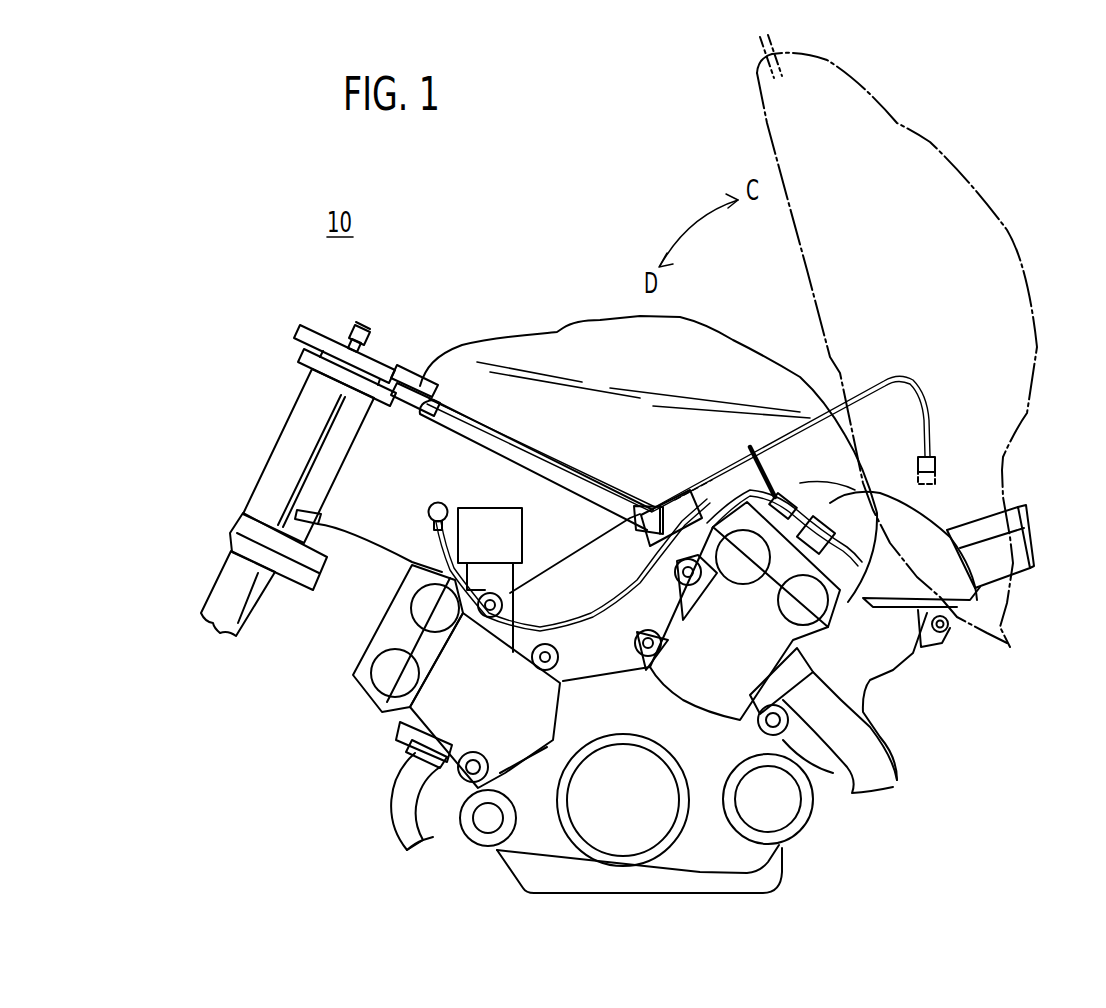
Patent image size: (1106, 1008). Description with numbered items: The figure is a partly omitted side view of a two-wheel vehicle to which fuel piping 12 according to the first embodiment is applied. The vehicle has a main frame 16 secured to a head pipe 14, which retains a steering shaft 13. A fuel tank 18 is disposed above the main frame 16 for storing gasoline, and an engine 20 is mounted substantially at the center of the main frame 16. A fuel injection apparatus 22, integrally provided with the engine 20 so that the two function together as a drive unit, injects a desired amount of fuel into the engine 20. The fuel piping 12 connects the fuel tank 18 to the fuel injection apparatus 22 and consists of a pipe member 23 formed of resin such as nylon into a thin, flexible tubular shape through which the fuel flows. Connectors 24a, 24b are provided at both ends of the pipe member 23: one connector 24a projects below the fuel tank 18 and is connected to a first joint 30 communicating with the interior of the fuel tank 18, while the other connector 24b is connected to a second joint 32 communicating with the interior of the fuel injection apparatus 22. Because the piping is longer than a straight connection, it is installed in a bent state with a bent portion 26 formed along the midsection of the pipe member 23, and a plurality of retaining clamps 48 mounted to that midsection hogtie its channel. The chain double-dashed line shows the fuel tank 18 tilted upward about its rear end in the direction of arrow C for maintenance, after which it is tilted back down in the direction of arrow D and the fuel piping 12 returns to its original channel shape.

The fuel piping 12 is at (542, 562).
The steering shaft 13 is at (230, 560).
The head pipe 14 is at (285, 458).
The main frame 16 is at (527, 480).
The fuel tank 18 is at (560, 346).
The engine 20 is at (738, 850).
The fuel injection apparatus 22 is at (500, 512).
The pipe member 23 is at (652, 500).
The connector 24a is at (807, 505).
The connector 24b is at (428, 517).
The bent portion 26 is at (740, 488).
The first joint 30 is at (940, 467).
The second joint 32 is at (432, 502).
The retaining clamp 48 is at (412, 566).